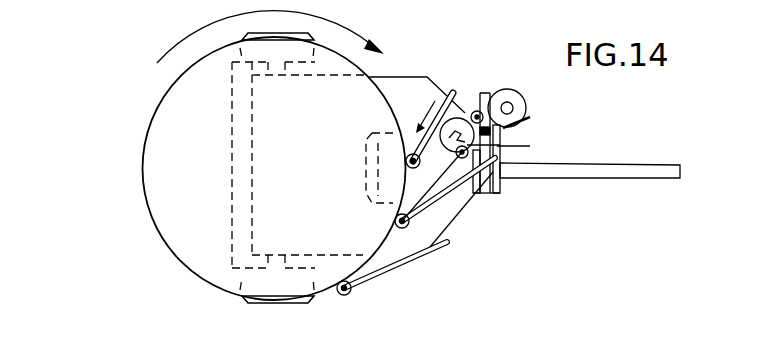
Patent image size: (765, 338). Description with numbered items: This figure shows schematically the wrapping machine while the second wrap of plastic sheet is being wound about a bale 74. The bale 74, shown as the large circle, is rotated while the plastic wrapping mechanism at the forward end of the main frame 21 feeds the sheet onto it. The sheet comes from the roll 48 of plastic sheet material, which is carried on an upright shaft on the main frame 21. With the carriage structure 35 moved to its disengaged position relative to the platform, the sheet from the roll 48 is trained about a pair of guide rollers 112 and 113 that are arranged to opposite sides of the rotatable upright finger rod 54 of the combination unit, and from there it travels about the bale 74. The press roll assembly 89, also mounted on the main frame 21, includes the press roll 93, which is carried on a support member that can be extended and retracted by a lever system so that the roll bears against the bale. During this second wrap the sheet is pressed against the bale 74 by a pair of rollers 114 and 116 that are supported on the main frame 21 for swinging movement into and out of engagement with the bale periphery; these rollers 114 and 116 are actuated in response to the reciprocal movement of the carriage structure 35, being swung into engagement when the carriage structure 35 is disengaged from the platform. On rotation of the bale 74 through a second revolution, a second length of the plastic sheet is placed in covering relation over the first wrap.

The bale 74 is at (162, 183).
The main frame 21 is at (398, 90).
The press roll assembly 89 is at (442, 92).
The press roll 93 is at (406, 161).
The guide roller 112 is at (479, 111).
The roll of plastic sheet material 48 is at (523, 100).
The upright rod 54 is at (497, 146).
The guide roller 113 is at (500, 157).
The carriage structure 35 is at (478, 200).
The roller 114 is at (410, 222).
The roller 116 is at (352, 291).